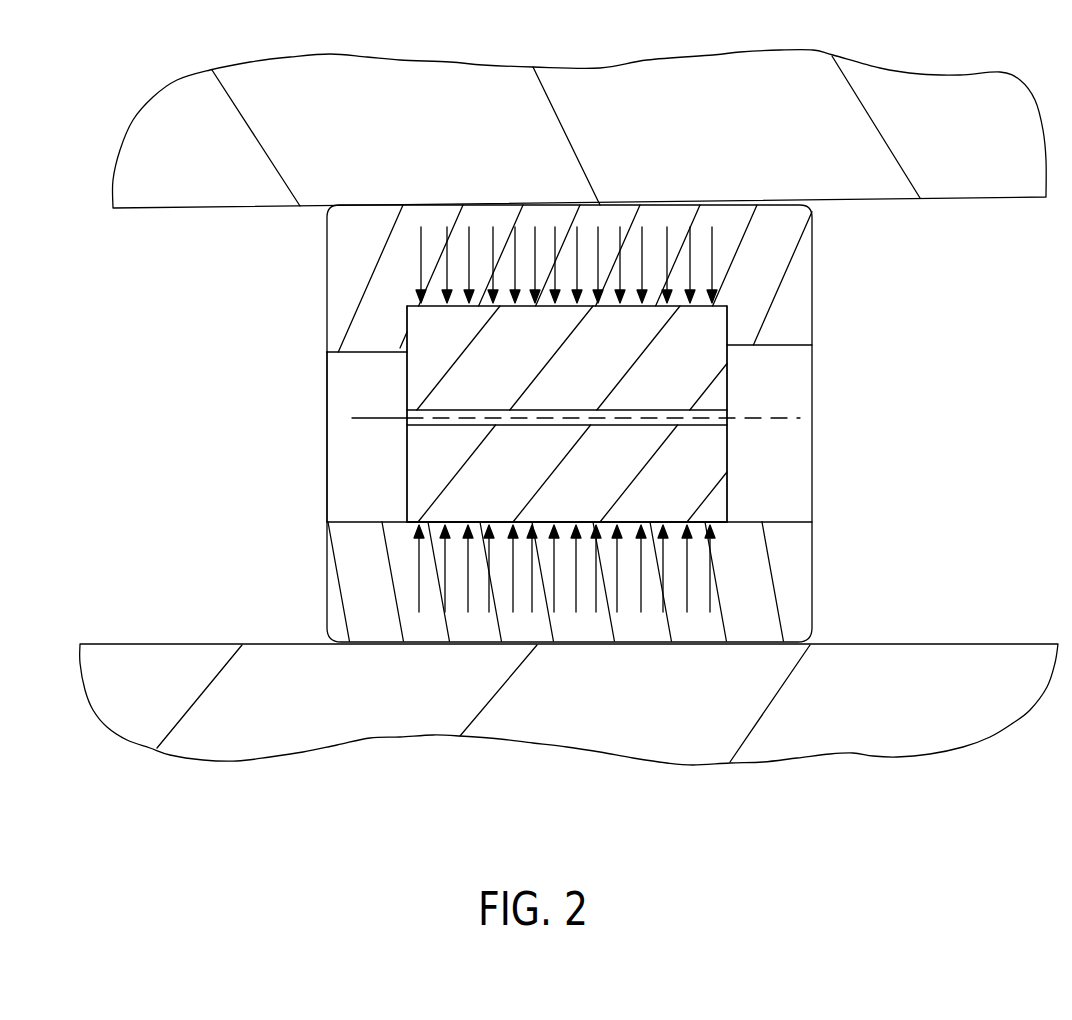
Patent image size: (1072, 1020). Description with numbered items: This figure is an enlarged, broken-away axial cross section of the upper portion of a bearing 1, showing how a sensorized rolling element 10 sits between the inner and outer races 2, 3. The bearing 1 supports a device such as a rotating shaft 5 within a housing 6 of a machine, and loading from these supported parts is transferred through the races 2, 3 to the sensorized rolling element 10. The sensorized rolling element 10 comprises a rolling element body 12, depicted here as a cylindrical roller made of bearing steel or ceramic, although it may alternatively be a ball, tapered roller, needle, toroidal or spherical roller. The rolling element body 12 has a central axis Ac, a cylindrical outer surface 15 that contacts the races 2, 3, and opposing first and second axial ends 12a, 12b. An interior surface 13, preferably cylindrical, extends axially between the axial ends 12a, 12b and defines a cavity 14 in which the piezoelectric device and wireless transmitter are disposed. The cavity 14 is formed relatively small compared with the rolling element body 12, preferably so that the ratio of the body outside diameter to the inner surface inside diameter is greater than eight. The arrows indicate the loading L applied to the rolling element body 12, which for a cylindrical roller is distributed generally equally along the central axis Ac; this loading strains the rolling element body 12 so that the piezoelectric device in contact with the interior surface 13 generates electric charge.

The bearing 1 is at (230, 319).
The inner race 2 is at (822, 567).
The outer race 3 is at (822, 281).
The rotating shaft 5 is at (845, 738).
The housing 6 is at (753, 77).
The sensorized rolling element 10 is at (352, 388).
The rolling element body 12 is at (738, 380).
The first axial end 12a is at (405, 466).
The second axial end 12b is at (728, 487).
The interior surface 13 is at (540, 425).
The cavity 14 is at (597, 420).
The cylindrical outer surface 15 is at (719, 523).
The loading L is at (565, 401).
The central axis Ac is at (785, 418).